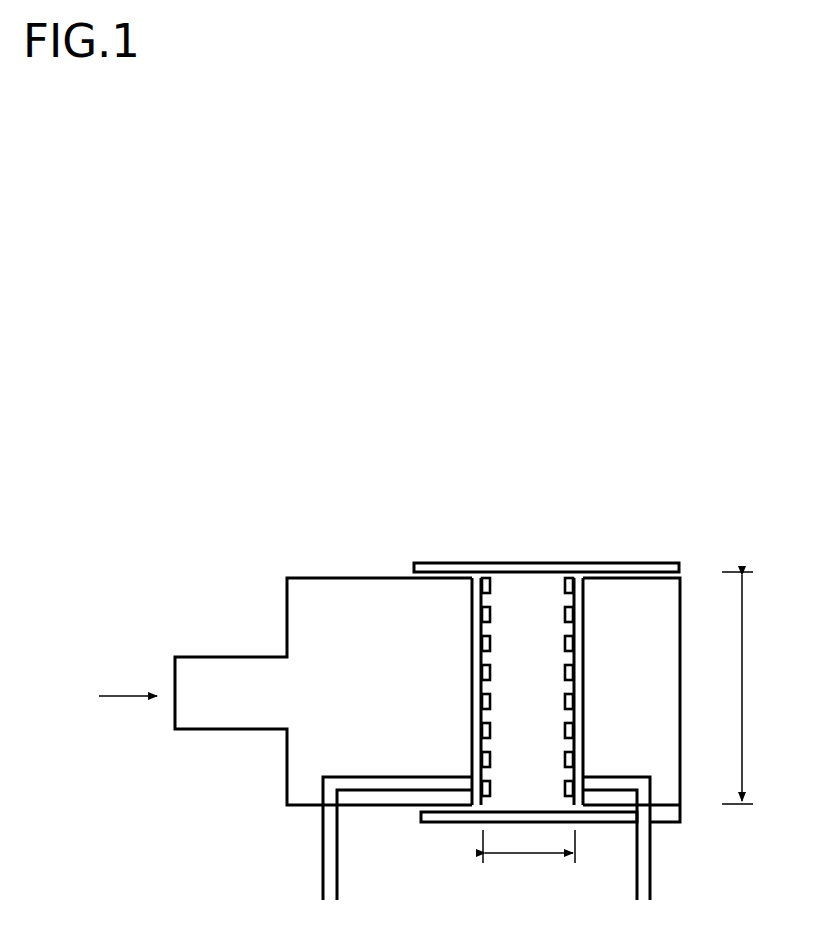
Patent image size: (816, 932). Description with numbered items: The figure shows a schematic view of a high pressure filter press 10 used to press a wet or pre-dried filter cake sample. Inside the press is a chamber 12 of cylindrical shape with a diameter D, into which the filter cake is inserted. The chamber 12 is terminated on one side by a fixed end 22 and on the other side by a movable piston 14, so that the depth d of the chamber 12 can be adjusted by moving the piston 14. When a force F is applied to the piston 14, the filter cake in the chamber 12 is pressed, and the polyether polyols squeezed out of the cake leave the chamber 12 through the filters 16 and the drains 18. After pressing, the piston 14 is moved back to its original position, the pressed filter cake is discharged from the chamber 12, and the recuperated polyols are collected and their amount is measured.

The high pressure filter press 10 is at (518, 543).
The chamber 12 is at (530, 593).
The movable piston 14 is at (310, 603).
The filters 16 is at (483, 610).
The drains 18 is at (327, 838).
The fixed end 22 is at (648, 622).